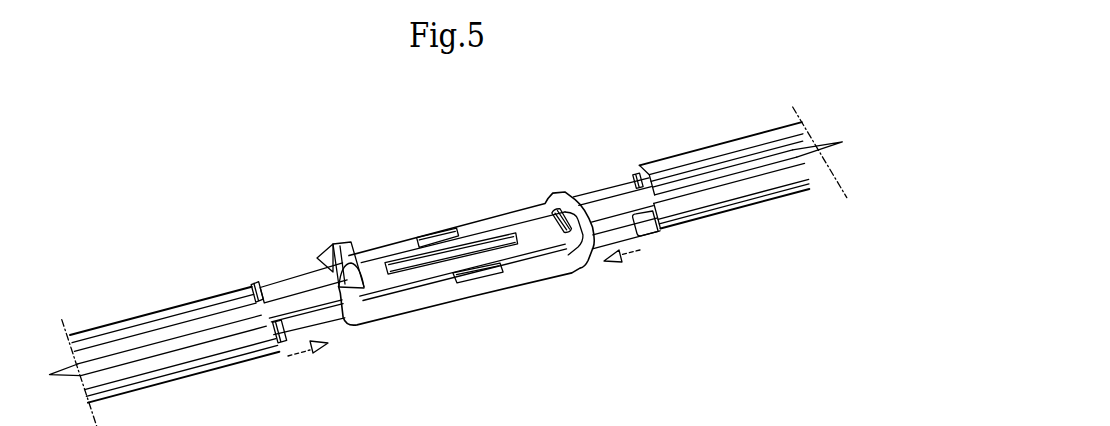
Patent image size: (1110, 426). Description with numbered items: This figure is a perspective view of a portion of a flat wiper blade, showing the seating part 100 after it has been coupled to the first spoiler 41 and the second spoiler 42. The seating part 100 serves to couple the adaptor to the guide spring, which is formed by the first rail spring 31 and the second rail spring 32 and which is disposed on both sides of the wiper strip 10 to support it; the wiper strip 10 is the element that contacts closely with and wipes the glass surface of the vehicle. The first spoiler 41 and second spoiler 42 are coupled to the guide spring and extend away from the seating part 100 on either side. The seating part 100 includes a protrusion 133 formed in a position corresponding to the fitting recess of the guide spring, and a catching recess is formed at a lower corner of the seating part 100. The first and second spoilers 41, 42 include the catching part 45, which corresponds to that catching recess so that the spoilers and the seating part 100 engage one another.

The seating part 100 is at (422, 220).
The wiper strip 10 is at (305, 300).
The first rail spring 31 is at (293, 283).
The second rail spring 32 is at (327, 327).
The first spoiler 41 is at (151, 318).
The second spoiler 42 is at (733, 152).
The catching part 45 is at (247, 287).
The protrusion 133 is at (442, 231).